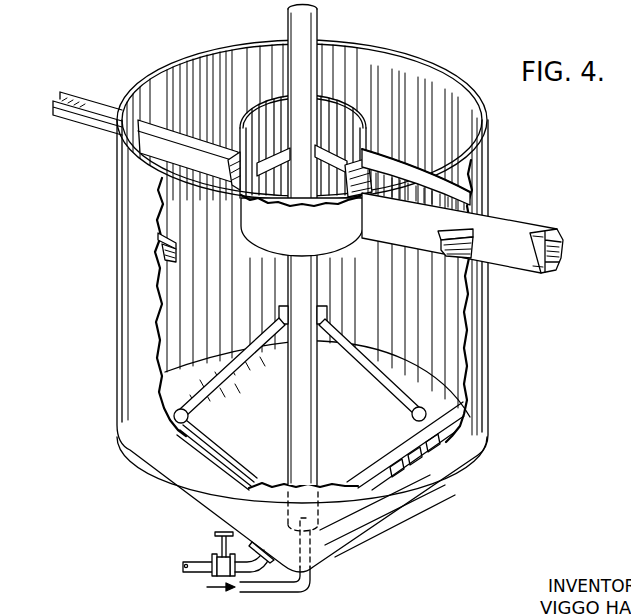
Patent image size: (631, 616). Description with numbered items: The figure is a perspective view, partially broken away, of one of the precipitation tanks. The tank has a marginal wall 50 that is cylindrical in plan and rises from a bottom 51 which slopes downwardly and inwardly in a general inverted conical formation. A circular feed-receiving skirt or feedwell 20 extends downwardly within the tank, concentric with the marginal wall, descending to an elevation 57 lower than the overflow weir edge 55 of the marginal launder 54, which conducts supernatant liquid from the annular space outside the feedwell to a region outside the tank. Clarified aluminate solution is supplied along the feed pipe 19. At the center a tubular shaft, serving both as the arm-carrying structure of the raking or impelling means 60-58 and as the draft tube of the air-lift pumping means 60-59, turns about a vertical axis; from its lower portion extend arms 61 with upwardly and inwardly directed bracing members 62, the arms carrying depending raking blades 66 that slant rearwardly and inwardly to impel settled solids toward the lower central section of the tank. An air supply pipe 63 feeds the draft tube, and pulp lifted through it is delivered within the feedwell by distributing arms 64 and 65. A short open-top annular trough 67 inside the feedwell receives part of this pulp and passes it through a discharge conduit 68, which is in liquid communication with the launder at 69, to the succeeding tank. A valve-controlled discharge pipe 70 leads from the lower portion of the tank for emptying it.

The feed pipe 19 is at (98, 104).
The feedwell 20 is at (350, 101).
The marginal wall 50 is at (162, 340).
The bottom 51 is at (317, 382).
The launder 54 is at (173, 262).
The overflow weir edge 55 is at (178, 239).
The lower elevation of feedwell 57 is at (271, 256).
The tubular shaft as lifting or pumping means 60-59 is at (320, 287).
The tubular shaft as raking or impelling means 60-58 is at (318, 346).
The arms 61 is at (222, 456).
The bracing members 62 is at (226, 377).
The air supply pipe 63 is at (267, 593).
The distributing arm 64 is at (272, 150).
The distributing arm 65 is at (324, 153).
The raking blades 66 is at (438, 452).
The annular trough 67 is at (366, 156).
The discharge conduit 68 is at (411, 198).
The liquid communication point 69 is at (488, 212).
The valve-controlled discharge pipe 70 is at (214, 556).